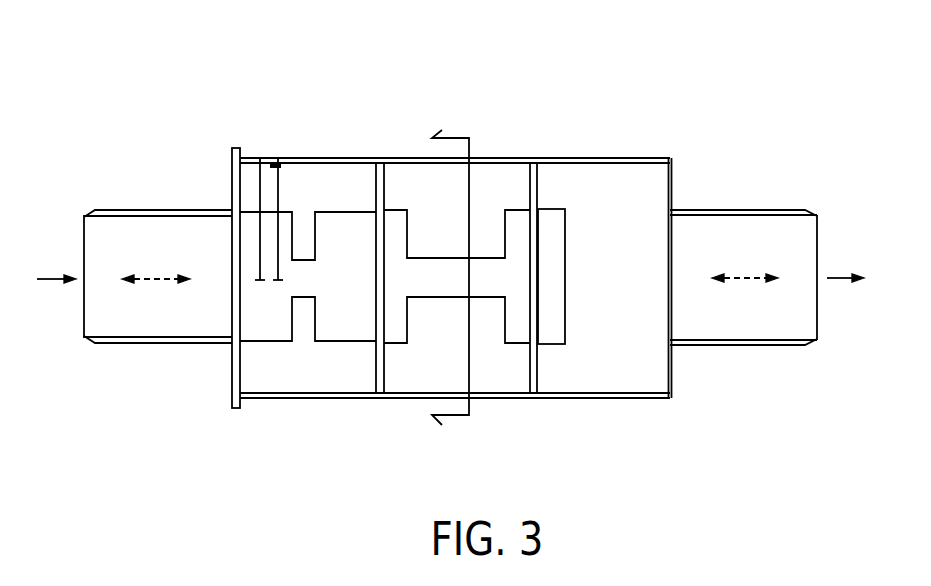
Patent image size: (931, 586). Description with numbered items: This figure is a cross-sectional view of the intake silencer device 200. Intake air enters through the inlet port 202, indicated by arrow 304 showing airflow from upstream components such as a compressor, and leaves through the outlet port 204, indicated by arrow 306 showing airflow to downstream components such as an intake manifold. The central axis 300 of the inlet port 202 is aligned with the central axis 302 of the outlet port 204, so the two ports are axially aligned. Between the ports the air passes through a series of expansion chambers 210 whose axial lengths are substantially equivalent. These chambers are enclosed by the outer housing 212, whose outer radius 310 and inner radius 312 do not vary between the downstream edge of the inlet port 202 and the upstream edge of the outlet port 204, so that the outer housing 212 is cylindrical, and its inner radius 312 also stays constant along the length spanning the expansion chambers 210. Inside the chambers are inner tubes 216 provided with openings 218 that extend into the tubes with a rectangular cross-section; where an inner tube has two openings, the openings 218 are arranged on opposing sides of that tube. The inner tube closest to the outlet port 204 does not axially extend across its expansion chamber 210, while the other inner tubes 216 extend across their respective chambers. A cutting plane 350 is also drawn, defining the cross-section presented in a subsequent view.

The intake silencer device 200 is at (272, 70).
The inlet port 202 is at (230, 212).
The outlet port 204 is at (825, 204).
The expansion chambers 210 is at (343, 197).
The outer housing 212 is at (348, 158).
The inner tubes 216 is at (372, 345).
The openings 218 is at (305, 226).
The central axis of the inlet port 300 is at (163, 278).
The central axis of the outlet port 302 is at (748, 277).
The arrow indicating intake airflow from upstream components 304 is at (50, 278).
The arrow indicating intake airflow to downstream components 306 is at (836, 278).
The outer radius 310 is at (258, 180).
The inner radius 312 is at (277, 171).
The cutting plane 350 is at (470, 406).